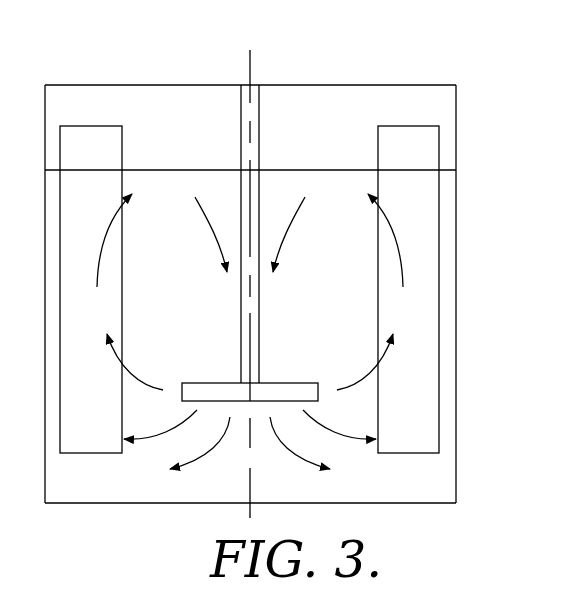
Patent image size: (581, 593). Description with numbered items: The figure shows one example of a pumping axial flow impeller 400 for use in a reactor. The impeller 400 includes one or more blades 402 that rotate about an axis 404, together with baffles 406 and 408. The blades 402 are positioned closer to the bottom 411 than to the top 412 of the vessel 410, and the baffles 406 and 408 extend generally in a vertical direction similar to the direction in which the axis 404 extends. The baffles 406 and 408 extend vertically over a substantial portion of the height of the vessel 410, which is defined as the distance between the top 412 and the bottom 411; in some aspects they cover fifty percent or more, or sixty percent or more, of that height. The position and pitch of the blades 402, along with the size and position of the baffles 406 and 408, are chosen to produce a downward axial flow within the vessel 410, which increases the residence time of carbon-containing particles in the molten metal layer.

The pumping axial flow impeller 400 is at (52, 67).
The blades 402 is at (298, 383).
The axis 404 is at (252, 60).
The baffle 406 is at (94, 126).
The baffle 408 is at (417, 126).
The vessel 410 is at (457, 273).
The bottom 411 is at (427, 504).
The top 412 is at (373, 85).